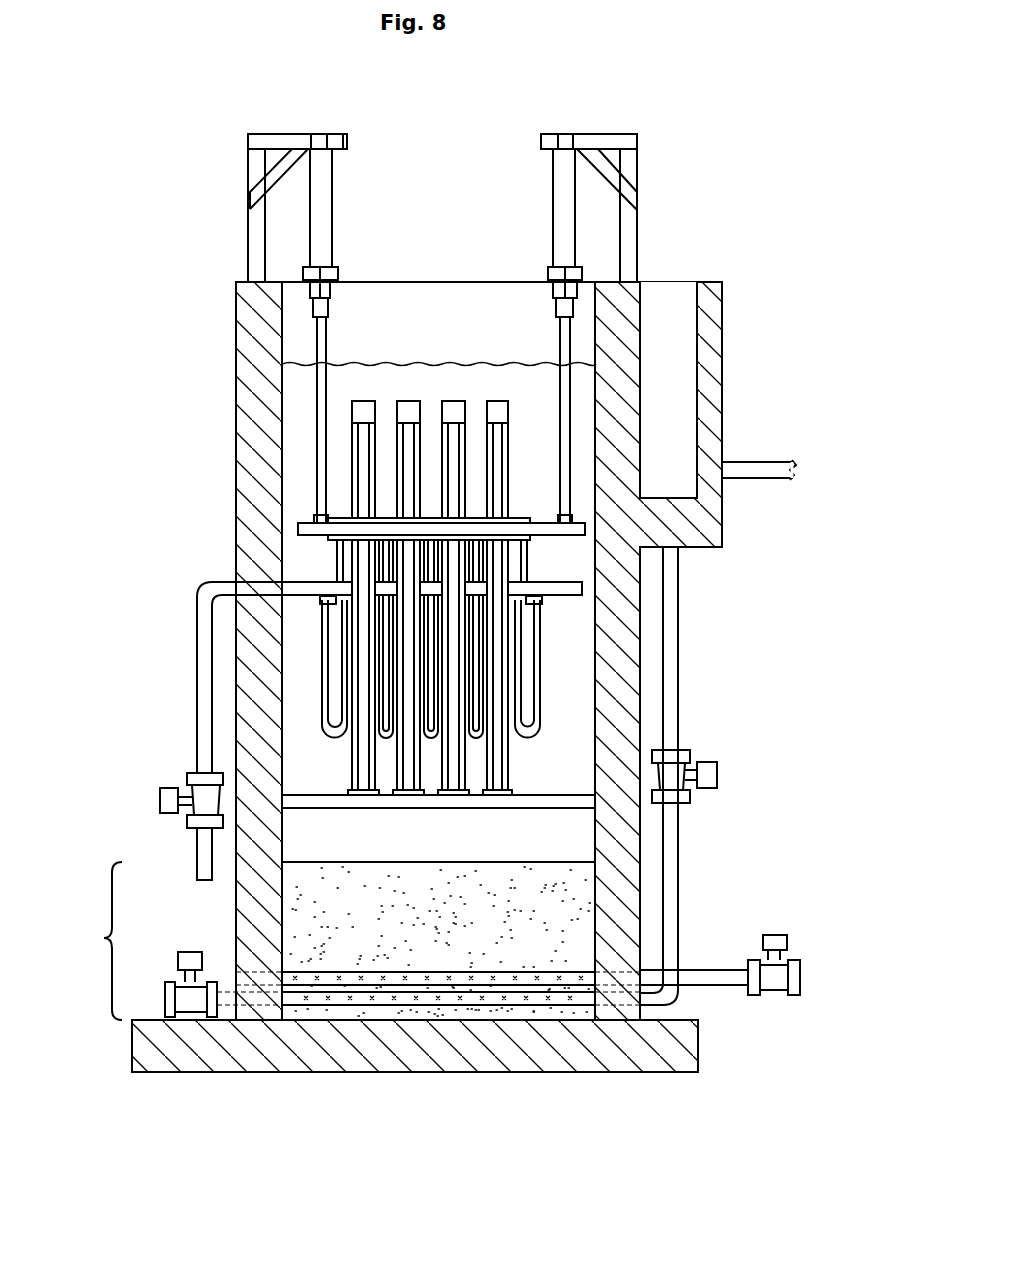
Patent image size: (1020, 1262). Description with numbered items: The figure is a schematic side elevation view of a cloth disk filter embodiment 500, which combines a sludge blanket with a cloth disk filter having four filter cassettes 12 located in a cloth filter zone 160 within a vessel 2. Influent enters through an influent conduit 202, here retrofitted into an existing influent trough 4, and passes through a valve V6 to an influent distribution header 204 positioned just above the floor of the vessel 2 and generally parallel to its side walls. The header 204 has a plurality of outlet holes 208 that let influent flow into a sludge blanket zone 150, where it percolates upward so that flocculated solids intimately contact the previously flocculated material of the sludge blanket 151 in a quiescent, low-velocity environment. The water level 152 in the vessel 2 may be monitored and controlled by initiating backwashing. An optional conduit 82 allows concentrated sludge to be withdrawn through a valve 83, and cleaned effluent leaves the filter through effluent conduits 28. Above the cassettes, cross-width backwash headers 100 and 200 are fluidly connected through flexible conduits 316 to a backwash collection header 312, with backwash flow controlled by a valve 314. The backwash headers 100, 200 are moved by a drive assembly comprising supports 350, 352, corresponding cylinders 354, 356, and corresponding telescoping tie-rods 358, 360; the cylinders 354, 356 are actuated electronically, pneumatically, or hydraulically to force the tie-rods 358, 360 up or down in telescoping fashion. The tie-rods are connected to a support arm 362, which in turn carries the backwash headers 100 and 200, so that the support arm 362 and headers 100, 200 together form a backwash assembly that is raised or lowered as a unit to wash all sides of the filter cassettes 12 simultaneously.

The cloth disk filter embodiment 500 is at (200, 84).
The support 350 is at (250, 160).
The support 352 is at (637, 170).
The cylinder 354 is at (333, 190).
The cylinder 356 is at (553, 212).
The water level 152 is at (478, 362).
The effluent conduit 28 is at (440, 400).
The cloth filter zone 160 is at (300, 413).
The vessel 2 is at (235, 452).
The telescoping tie-rod 358 is at (318, 490).
The support arm 362 is at (320, 537).
The backwash header 200 is at (280, 574).
The backwash collection header 312 is at (195, 672).
The valve 314 is at (165, 795).
The sludge blanket zone 150 is at (105, 937).
The sludge blanket 151 is at (312, 945).
The telescoping tie-rod 360 is at (572, 330).
The influent trough 4 is at (672, 360).
The filter cassette 12 is at (467, 445).
The influent conduit 202 is at (770, 490).
The backwash header 100 is at (590, 583).
The flexible conduit 316 is at (540, 640).
The valve V6 is at (720, 775).
The valve 83 is at (780, 993).
The conduit 82 is at (428, 992).
The influent distribution header 204 is at (538, 998).
The outlet hole 208 is at (398, 972).